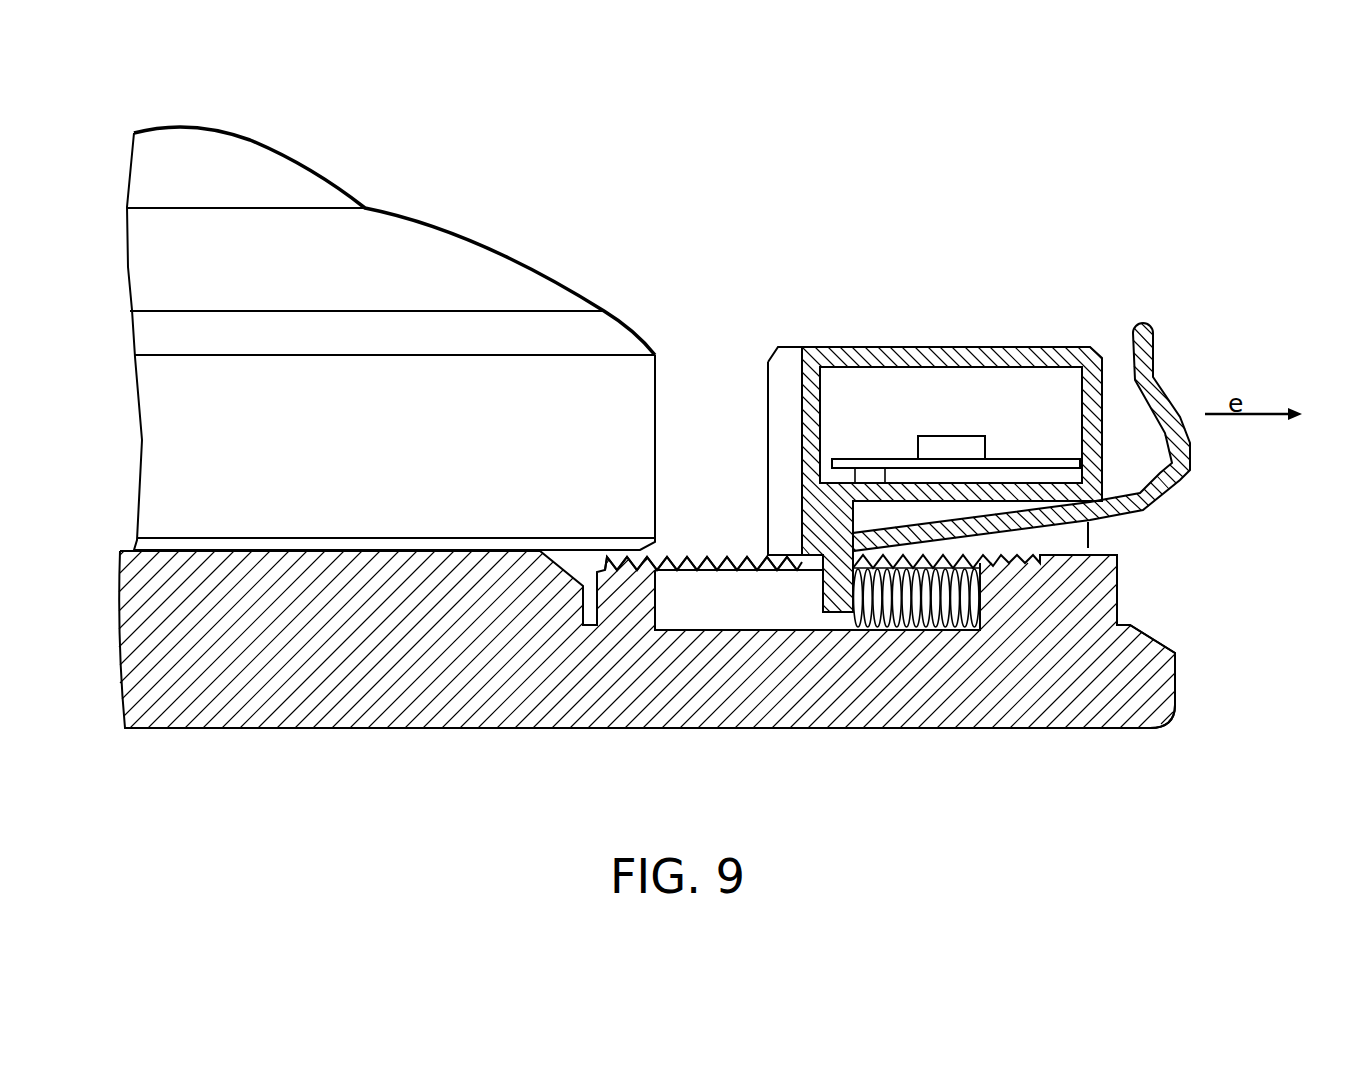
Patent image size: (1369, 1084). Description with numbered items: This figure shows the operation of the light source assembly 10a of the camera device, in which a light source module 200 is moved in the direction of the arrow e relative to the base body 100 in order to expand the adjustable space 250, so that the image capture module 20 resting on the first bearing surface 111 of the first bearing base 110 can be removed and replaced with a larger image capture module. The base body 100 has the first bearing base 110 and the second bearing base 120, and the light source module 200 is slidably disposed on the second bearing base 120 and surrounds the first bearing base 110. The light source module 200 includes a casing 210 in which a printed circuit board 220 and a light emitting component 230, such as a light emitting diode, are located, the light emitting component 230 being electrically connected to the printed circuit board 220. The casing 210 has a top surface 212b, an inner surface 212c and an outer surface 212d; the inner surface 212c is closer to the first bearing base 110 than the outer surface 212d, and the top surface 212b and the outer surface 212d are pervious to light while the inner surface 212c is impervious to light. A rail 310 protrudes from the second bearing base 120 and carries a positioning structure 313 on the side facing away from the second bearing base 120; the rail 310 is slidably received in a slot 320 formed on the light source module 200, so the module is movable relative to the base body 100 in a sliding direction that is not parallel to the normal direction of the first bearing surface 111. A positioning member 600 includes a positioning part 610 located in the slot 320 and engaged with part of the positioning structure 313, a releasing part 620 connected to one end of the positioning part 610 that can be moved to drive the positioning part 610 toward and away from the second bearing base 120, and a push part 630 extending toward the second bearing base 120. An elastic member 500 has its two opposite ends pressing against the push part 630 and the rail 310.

The image capture module 20 is at (457, 232).
The first bearing surface 111 is at (200, 540).
The adjustable space 250 is at (683, 375).
The inner surface 212c is at (790, 392).
The light source module 200 is at (952, 428).
The casing 210 is at (1007, 347).
The printed circuit board 220 is at (950, 436).
The light emitting component 230 is at (873, 458).
The top surface 212b is at (1062, 336).
The outer surface 212d is at (1116, 398).
The positioning member 600 is at (1105, 437).
The push part 630 is at (903, 493).
The releasing part 620 is at (1183, 478).
The positioning part 610 is at (855, 548).
The base body 100 is at (1178, 626).
The first bearing base 110 is at (338, 692).
The second bearing base 120 is at (1162, 680).
The rail 310 is at (1100, 593).
The positioning structure 313 is at (720, 552).
The slot 320 is at (1082, 546).
The elastic member 500 is at (876, 630).
The light source assembly 10a is at (1234, 580).